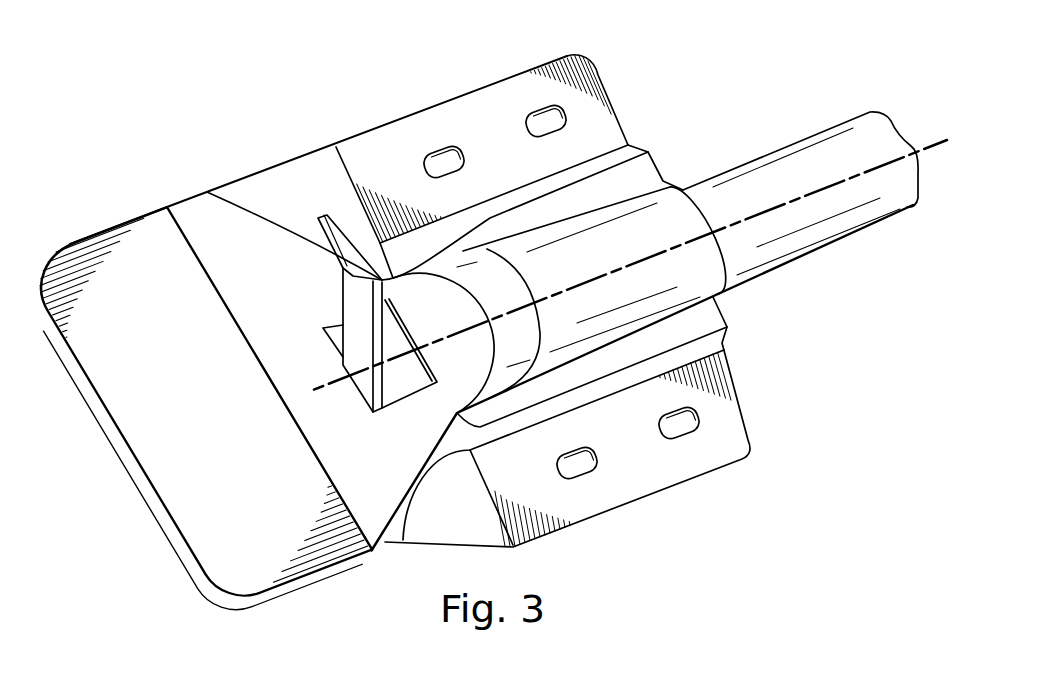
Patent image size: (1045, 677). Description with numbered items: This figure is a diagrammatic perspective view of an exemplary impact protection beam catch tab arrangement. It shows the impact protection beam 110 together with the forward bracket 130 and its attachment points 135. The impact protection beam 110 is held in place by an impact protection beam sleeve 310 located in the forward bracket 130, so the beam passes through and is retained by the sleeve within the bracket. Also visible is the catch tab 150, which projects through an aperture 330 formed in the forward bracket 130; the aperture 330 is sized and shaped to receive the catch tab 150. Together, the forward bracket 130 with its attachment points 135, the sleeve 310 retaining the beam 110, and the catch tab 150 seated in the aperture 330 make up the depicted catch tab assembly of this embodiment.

The impact protection beam 110 is at (820, 248).
The forward bracket 130 is at (145, 423).
The attachment points 135 is at (447, 160).
The catch tab 150 is at (332, 208).
The impact protection beam sleeve 310 is at (704, 270).
The aperture 330 is at (406, 392).